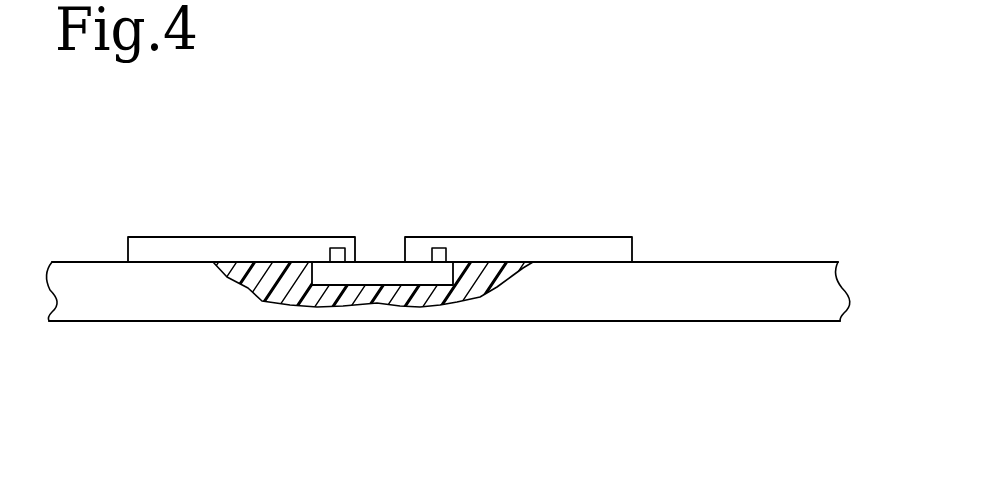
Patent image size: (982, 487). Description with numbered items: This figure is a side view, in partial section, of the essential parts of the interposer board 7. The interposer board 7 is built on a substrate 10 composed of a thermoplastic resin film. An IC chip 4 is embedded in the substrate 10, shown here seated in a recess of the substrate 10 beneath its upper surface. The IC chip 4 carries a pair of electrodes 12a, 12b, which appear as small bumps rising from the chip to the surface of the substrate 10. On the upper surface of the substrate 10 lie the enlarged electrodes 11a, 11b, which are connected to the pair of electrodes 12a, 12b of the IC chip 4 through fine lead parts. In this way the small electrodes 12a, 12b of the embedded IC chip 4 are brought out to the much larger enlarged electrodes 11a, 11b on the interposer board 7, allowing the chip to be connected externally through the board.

The interposer board 7 is at (788, 250).
The substrate 10 is at (797, 302).
The enlarged electrode 11a is at (140, 246).
The enlarged electrode 11b is at (613, 246).
The electrode 12a is at (338, 258).
The electrode 12b is at (440, 246).
The IC chip 4 is at (423, 277).